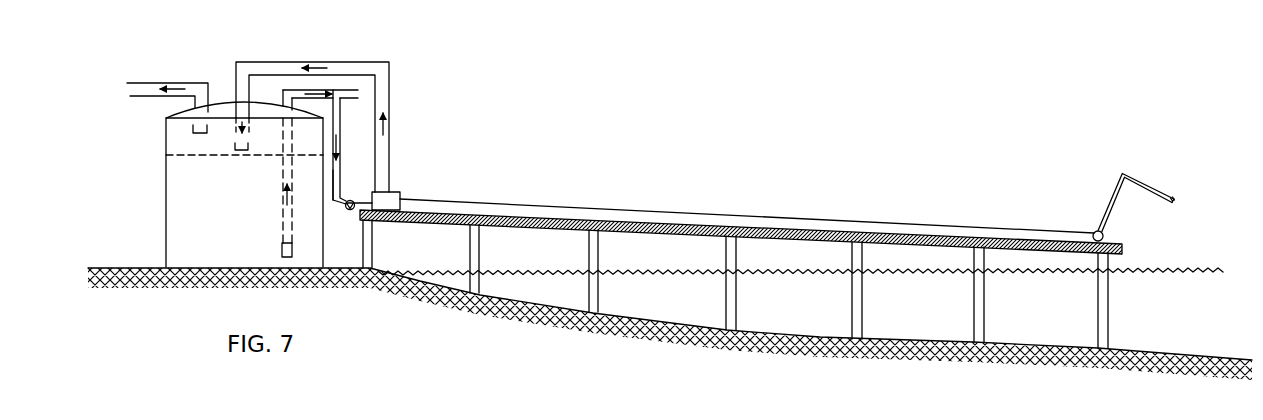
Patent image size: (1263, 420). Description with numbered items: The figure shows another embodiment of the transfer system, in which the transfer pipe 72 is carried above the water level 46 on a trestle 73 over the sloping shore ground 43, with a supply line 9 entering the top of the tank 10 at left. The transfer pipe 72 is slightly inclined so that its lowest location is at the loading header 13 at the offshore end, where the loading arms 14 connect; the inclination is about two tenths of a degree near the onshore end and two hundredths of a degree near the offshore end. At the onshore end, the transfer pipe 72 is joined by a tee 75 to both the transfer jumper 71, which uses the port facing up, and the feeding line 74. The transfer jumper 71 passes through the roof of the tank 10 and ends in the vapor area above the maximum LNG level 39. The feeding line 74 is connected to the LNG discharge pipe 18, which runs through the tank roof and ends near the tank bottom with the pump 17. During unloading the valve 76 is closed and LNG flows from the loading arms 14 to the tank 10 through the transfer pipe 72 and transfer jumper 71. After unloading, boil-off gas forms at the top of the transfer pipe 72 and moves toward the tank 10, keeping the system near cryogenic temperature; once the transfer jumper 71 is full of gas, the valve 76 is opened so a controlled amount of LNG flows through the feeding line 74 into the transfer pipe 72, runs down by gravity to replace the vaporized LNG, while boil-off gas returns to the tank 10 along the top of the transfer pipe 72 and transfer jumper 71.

The supply conduit 9 is at (147, 82).
The tank 10 is at (158, 203).
The loading header 13 is at (1096, 231).
The loading arms 14 is at (1162, 176).
The pump 17 is at (281, 250).
The LNG discharge pipe 18 is at (357, 99).
The maximum LNG level 39 is at (213, 156).
The shore ground 43 is at (1018, 342).
The water level 46 is at (1180, 268).
The transfer jumper 71 is at (390, 90).
The transfer pipe 72 is at (700, 213).
The trestle 73 is at (495, 228).
The feeding line 74 is at (337, 208).
The tee 75 is at (387, 203).
The valve 76 is at (350, 200).